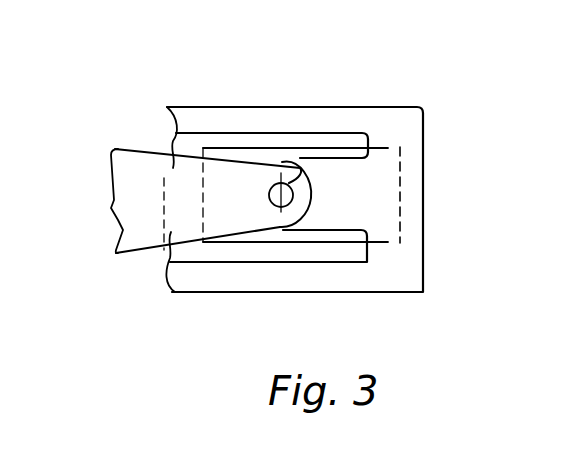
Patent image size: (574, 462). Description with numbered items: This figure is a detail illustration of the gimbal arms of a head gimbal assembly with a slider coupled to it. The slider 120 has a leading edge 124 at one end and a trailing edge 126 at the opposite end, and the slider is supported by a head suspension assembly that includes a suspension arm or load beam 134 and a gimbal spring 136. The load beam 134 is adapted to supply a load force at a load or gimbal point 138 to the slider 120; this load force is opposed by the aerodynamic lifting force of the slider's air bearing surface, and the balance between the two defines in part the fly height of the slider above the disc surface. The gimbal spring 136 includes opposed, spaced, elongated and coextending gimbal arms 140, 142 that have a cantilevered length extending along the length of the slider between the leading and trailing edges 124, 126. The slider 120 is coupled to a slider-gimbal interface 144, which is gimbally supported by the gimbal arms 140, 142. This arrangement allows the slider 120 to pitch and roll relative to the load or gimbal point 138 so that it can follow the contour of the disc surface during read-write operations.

The slider 120 is at (244, 154).
The leading edge 124 is at (205, 200).
The trailing edge 126 is at (400, 183).
The load beam 134 is at (131, 160).
The gimbal spring 136 is at (392, 112).
The gimbal point 138 is at (293, 168).
The gimbal arm 140 is at (193, 137).
The gimbal arm 142 is at (210, 272).
The slider-gimbal interface 144 is at (337, 260).